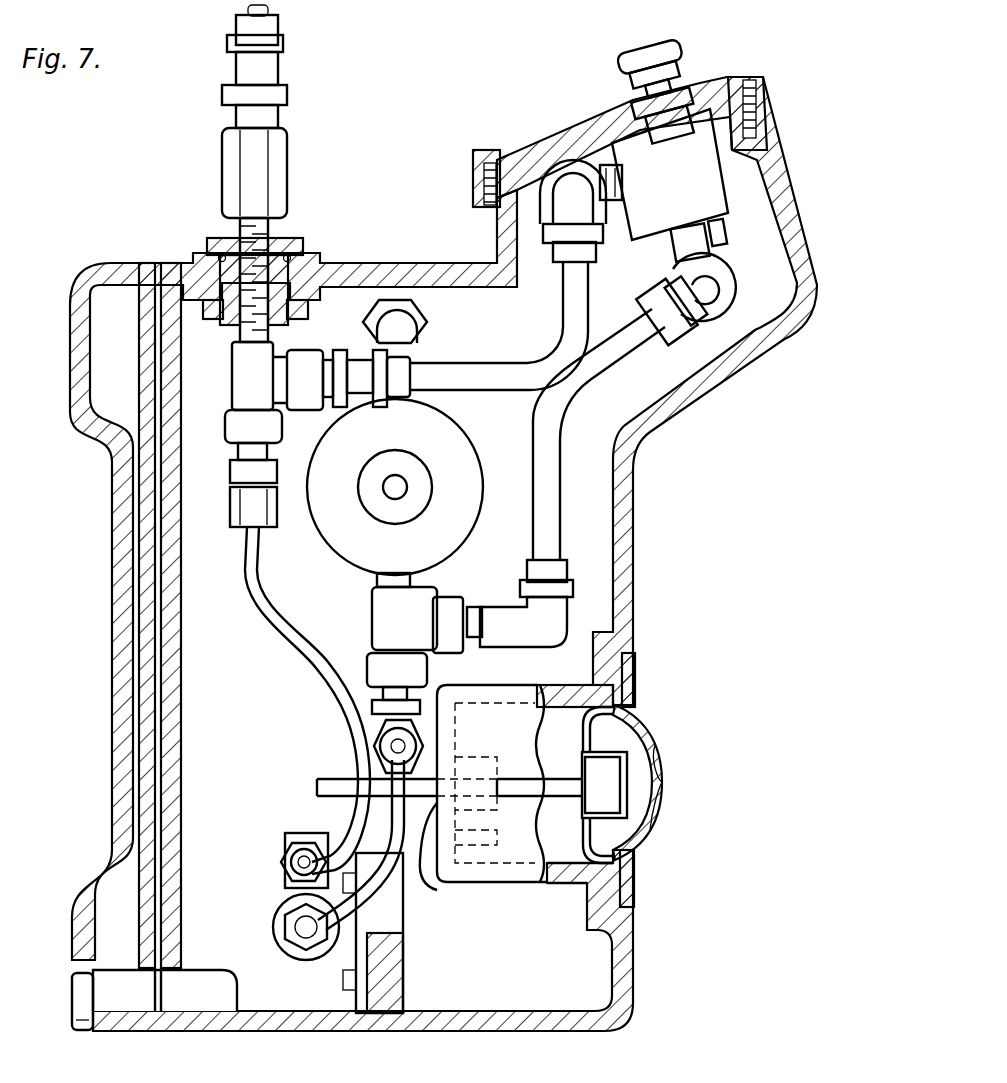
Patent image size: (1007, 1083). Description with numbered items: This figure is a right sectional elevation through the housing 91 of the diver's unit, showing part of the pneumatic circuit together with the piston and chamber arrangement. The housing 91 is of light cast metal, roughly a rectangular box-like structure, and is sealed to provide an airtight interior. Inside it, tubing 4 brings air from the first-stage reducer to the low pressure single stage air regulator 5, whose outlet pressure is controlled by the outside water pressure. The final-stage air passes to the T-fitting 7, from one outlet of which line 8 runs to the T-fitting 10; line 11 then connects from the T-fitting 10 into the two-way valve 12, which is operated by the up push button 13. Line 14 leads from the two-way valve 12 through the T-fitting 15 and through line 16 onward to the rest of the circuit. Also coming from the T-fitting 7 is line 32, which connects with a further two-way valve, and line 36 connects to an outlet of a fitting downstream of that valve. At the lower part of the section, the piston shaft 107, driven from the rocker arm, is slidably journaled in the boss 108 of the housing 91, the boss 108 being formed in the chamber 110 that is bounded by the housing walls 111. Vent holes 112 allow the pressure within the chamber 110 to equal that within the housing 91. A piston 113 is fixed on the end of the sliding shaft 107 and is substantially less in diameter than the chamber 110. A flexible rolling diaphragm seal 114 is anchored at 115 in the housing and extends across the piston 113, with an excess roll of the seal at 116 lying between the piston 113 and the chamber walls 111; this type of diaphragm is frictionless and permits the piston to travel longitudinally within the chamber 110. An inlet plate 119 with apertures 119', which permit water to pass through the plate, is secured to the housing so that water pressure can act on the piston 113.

The tubing 4 is at (410, 310).
The low pressure single stage air regulator 5 is at (467, 510).
The T-fitting 7 is at (403, 610).
The line 8 is at (547, 437).
The T-fitting 10 is at (723, 293).
The line 11 is at (703, 253).
The two-way valve 12 is at (688, 205).
The up push button 13 is at (645, 52).
The line 14 is at (565, 345).
The T-fitting 15 is at (248, 363).
The line 16 is at (263, 97).
The line 32 is at (393, 703).
The line 36 is at (277, 603).
The housing 91 is at (622, 520).
The piston shaft 107 is at (317, 788).
The boss 108 is at (428, 873).
The chamber 110 is at (533, 840).
The housing walls 111 is at (548, 872).
The vent holes 112 is at (495, 783).
The piston 113 is at (597, 767).
The flexible rolling diaphragm seal 114 is at (627, 910).
The seal anchor 115 is at (643, 667).
The excess roll of seal 116 is at (632, 703).
The inlet plate 119 is at (673, 802).
The apertures 119' is at (703, 787).